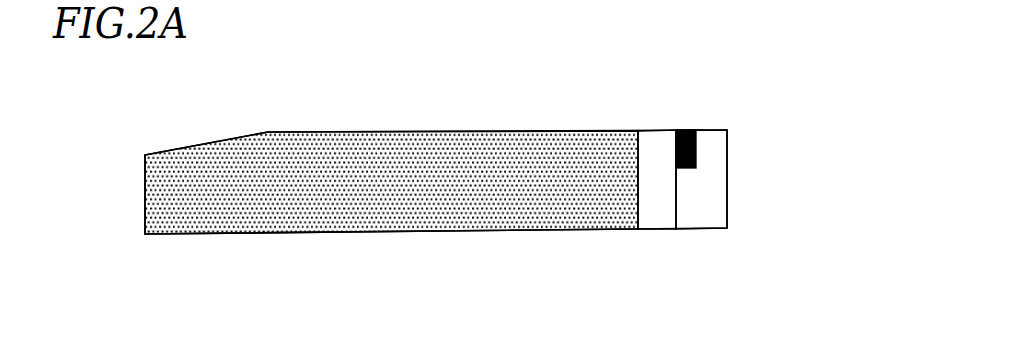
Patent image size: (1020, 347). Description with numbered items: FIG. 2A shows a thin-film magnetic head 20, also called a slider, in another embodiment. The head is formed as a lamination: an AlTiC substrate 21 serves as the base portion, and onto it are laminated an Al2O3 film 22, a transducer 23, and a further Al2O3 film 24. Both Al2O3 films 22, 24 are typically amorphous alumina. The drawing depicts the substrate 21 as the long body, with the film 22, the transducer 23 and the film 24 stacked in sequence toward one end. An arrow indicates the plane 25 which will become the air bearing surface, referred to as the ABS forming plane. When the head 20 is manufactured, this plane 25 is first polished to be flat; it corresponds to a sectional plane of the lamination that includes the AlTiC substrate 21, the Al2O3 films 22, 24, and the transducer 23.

The thin-film magnetic head 20 is at (843, 142).
The AlTiC substrate 21 is at (455, 232).
The Al2O3 film 22 is at (657, 222).
The transducer 23 is at (696, 152).
The Al2O3 film 24 is at (718, 212).
The ABS forming plane 25 is at (411, 121).